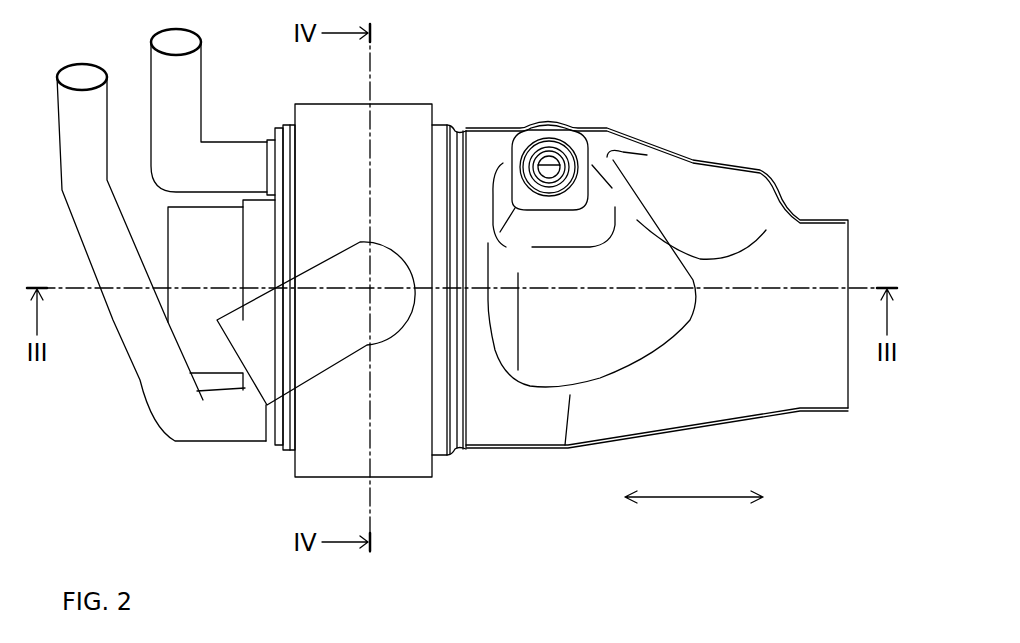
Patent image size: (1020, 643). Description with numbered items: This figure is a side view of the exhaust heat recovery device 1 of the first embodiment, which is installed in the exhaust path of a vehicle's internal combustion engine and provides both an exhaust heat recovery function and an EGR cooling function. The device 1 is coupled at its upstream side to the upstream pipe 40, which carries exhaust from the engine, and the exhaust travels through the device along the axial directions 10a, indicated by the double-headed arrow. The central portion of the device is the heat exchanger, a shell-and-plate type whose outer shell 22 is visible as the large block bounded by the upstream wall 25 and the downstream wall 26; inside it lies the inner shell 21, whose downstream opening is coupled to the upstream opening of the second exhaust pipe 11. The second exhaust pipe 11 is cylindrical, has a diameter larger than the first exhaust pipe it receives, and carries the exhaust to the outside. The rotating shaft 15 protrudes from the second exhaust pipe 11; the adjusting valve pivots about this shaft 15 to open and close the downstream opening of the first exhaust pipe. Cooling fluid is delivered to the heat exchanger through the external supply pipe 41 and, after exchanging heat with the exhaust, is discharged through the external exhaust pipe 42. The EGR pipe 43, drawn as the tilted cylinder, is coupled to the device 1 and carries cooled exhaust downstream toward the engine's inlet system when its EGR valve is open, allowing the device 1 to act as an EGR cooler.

The exhaust heat recovery device 1 is at (760, 129).
The axial directions 10a is at (702, 500).
The second exhaust pipe 11 is at (678, 180).
The rotating shaft 15 is at (535, 140).
The inner shell 21 is at (440, 127).
The outer shell 22 is at (407, 120).
The upstream wall 25 is at (290, 452).
The downstream wall 26 is at (435, 469).
The upstream pipe 40 is at (190, 238).
The external supply pipe 41 is at (232, 158).
The external exhaust pipe 42 is at (182, 423).
The EGR pipe 43 is at (330, 352).